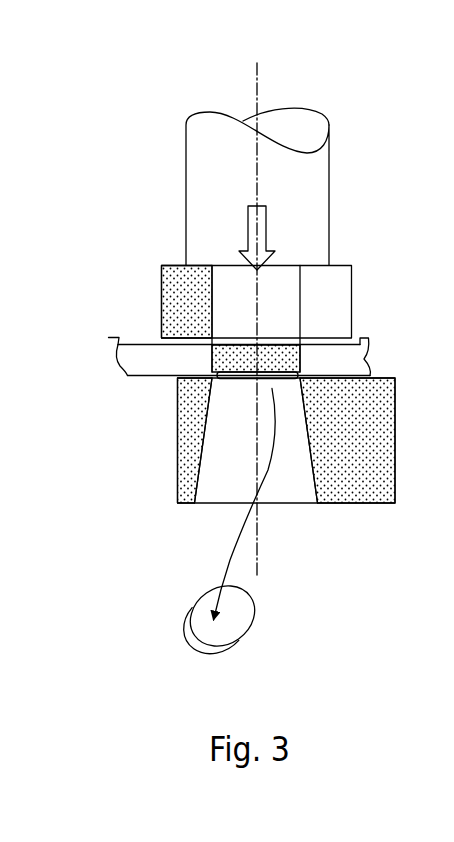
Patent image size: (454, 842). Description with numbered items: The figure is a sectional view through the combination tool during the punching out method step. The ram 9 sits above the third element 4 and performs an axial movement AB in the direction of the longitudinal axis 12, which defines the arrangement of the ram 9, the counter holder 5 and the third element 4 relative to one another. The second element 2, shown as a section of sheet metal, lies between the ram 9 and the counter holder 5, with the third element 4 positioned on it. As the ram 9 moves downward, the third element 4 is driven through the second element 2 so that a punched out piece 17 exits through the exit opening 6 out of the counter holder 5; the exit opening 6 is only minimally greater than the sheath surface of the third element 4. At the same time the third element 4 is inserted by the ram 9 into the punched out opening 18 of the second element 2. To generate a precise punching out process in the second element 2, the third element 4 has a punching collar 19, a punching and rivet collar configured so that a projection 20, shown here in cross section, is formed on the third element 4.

The longitudinal axis 12 is at (252, 71).
The ram 9 is at (195, 180).
The axial movement AB is at (252, 220).
The punched out opening 18 is at (285, 338).
The third element 4 is at (234, 349).
The second element 2 is at (160, 358).
The punching collar 19 is at (292, 402).
The counter holder 5 is at (177, 466).
The exit opening 6 is at (209, 472).
The projection 20 is at (291, 378).
The punched out piece 17 is at (216, 610).